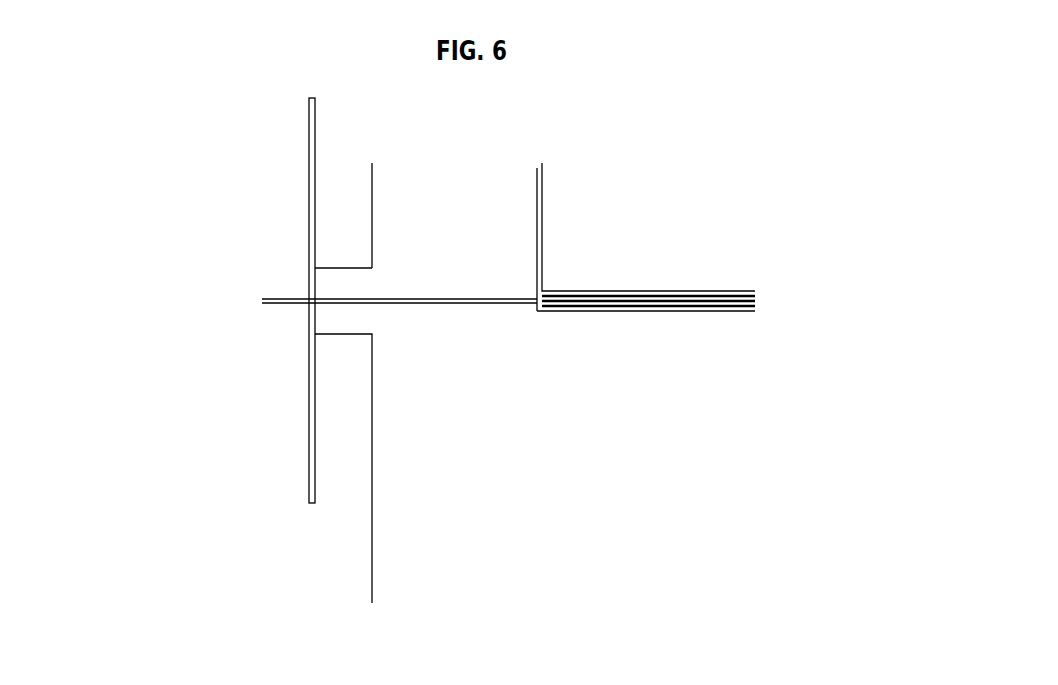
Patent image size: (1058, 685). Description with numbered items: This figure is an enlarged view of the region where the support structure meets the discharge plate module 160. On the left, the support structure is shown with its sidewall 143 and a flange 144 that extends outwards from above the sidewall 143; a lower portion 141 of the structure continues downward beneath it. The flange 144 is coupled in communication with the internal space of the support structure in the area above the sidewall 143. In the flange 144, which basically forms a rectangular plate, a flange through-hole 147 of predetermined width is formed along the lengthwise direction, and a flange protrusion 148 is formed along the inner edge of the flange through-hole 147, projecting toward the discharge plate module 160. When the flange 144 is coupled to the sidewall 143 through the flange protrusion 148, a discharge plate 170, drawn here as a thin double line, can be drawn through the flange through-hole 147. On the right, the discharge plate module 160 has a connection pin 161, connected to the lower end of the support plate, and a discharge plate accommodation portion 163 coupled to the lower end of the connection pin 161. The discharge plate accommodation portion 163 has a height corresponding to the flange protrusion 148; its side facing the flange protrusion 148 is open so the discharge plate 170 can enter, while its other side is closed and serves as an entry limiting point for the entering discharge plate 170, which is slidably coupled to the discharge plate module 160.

The lower bracket portion 141 is at (371, 583).
The sidewall 143 is at (372, 190).
The flange 144 is at (305, 190).
The flange through-hole 147 is at (305, 290).
The flange protrusion 148 is at (335, 266).
The discharge plate module 160 is at (704, 313).
The connection pin 161 is at (542, 205).
The discharge plate accommodation portion 163 is at (560, 314).
The discharge plate 170 is at (290, 307).